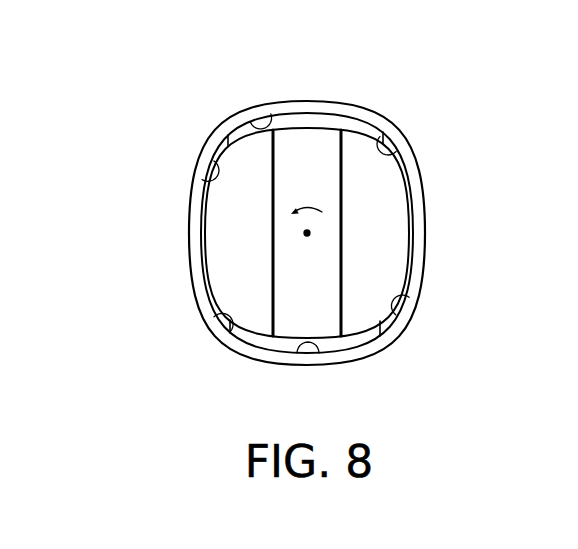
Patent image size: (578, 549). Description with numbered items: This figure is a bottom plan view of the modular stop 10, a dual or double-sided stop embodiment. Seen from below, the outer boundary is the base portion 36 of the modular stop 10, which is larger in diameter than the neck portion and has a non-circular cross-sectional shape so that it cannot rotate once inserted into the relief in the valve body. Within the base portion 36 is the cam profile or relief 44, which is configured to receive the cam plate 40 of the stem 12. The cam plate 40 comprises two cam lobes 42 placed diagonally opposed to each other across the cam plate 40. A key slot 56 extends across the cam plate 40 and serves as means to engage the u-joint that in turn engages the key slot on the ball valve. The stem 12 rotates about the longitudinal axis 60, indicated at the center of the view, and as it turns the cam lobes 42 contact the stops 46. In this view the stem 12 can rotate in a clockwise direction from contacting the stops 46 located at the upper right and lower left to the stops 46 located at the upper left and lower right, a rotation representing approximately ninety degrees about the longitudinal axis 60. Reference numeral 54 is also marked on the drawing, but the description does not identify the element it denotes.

The modular stop 10 is at (171, 111).
The stem 12 is at (400, 226).
The cam plate 40 is at (366, 233).
The base portion 36 is at (400, 142).
The cam lobes 42 is at (364, 142).
The cam profile or relief 44 is at (263, 127).
The stops 46 is at (384, 143).
The ring 54 is at (325, 108).
The key slot 56 is at (312, 150).
The longitudinal axis 60 is at (305, 235).